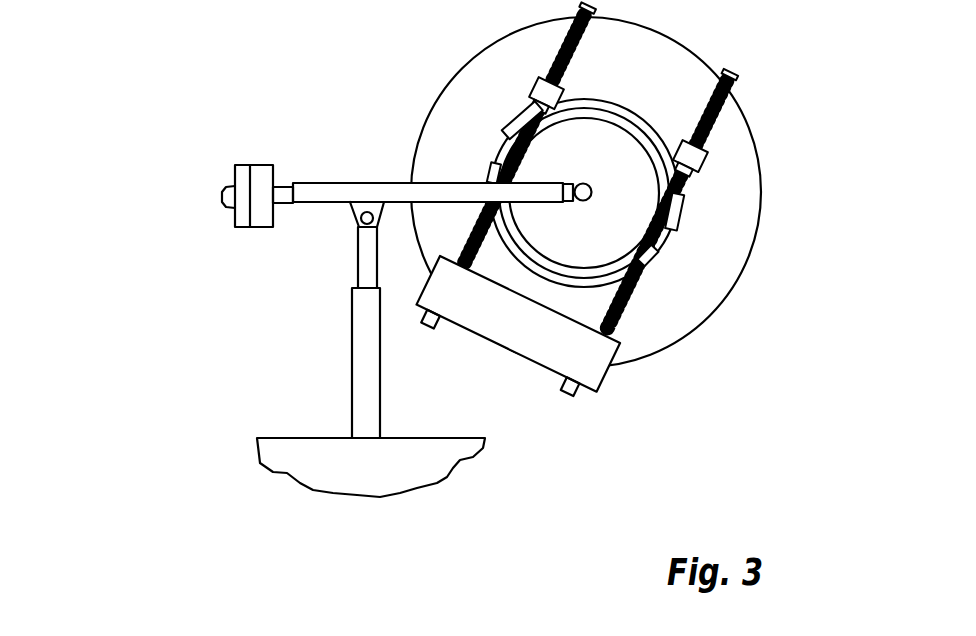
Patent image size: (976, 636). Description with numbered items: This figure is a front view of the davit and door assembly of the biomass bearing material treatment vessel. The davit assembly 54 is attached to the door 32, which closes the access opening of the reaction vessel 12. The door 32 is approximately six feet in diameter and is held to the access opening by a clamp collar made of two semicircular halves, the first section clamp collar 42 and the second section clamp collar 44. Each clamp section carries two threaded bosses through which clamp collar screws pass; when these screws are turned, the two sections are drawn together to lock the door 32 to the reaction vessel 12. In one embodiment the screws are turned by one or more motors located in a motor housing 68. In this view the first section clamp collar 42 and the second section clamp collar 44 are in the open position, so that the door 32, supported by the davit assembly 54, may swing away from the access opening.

The reaction vessel 12 is at (747, 117).
The door 32 is at (635, 218).
The first section clamp collar 42 is at (643, 260).
The second section clamp collar 44 is at (675, 205).
The davit assembly 54 is at (287, 150).
The motor housing 68 is at (547, 377).